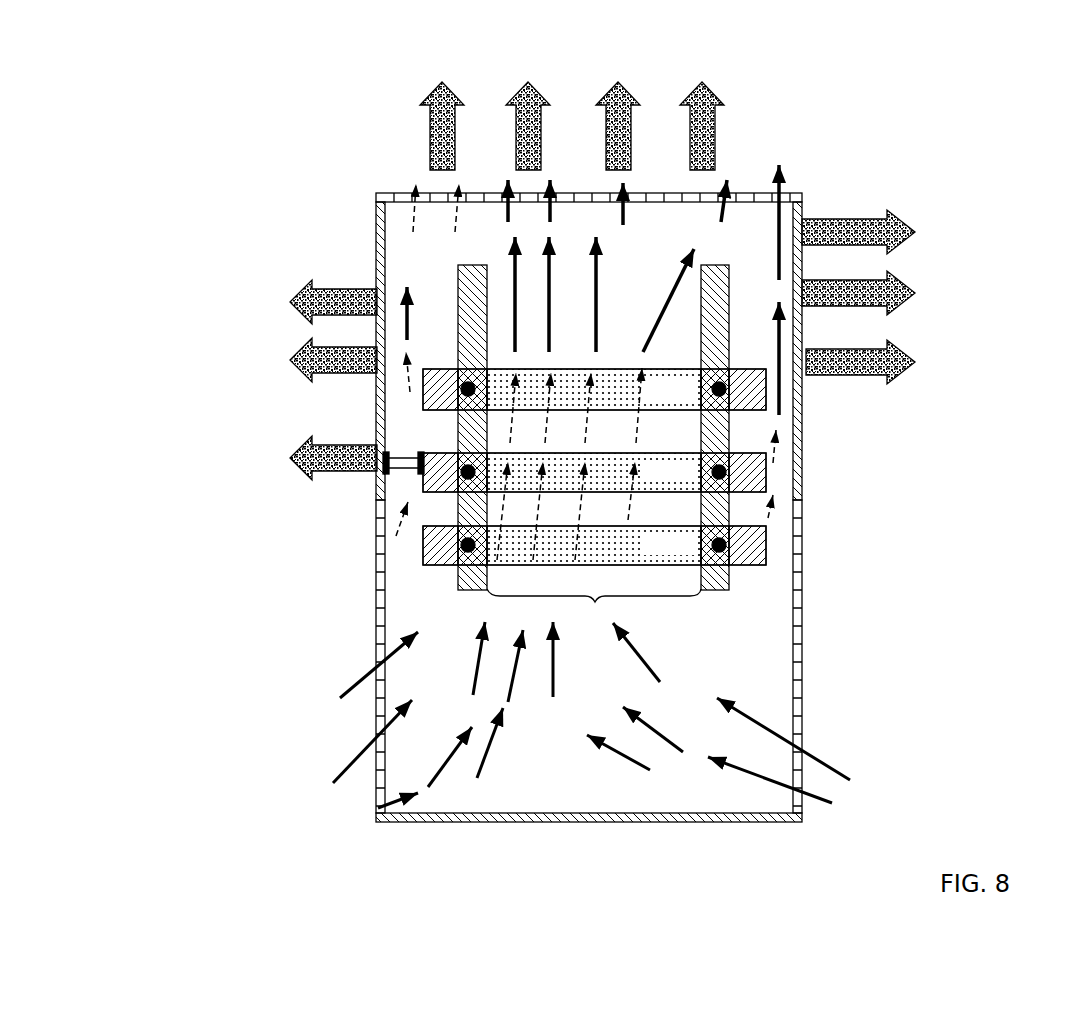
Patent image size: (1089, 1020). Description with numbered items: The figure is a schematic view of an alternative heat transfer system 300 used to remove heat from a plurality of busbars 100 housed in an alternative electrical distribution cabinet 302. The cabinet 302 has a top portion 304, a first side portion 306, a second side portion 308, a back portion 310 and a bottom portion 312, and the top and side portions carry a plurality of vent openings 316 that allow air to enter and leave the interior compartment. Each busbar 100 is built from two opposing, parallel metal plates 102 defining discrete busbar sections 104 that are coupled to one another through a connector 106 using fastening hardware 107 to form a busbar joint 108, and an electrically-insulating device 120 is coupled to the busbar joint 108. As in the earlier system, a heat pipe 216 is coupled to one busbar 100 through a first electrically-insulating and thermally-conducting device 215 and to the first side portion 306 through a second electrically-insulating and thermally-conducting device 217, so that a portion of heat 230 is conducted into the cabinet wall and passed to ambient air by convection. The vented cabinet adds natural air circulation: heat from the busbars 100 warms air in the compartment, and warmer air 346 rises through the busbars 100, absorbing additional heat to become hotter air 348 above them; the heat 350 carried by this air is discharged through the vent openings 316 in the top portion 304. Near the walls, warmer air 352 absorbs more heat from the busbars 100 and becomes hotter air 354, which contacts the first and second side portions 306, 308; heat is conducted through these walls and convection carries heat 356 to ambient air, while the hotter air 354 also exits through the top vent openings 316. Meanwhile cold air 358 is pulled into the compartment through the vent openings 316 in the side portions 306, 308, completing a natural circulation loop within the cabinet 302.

The heat transfer system 300 is at (353, 97).
The electrical distribution cabinet 302 is at (387, 187).
The top portion 304 is at (747, 200).
The first side portion 306 is at (375, 705).
The second side portion 308 is at (802, 695).
The back portion 310 is at (736, 806).
The bottom portion 312 is at (490, 818).
The vent openings 316 is at (655, 182).
The warmer air 346 is at (500, 508).
The hotter air 348 is at (552, 177).
The heat 350 is at (440, 100).
The warmer air 352 is at (395, 535).
The hotter air 354 is at (410, 317).
The heat 356 is at (915, 232).
The cold air 358 is at (340, 773).
The busbar 100 is at (757, 472).
The metal plates 102 is at (740, 540).
The busbar sections 104 is at (594, 467).
The connector 106 is at (690, 402).
The fastening hardware 107 is at (740, 548).
The busbar joint 108 is at (594, 611).
The electrically-insulating device 120 is at (460, 578).
The first electrically-insulating and thermally-conducting device 215 is at (420, 452).
The heat pipe 216 is at (392, 472).
The second electrically-insulating and thermally-conducting device 217 is at (385, 452).
The heat 230 is at (300, 458).